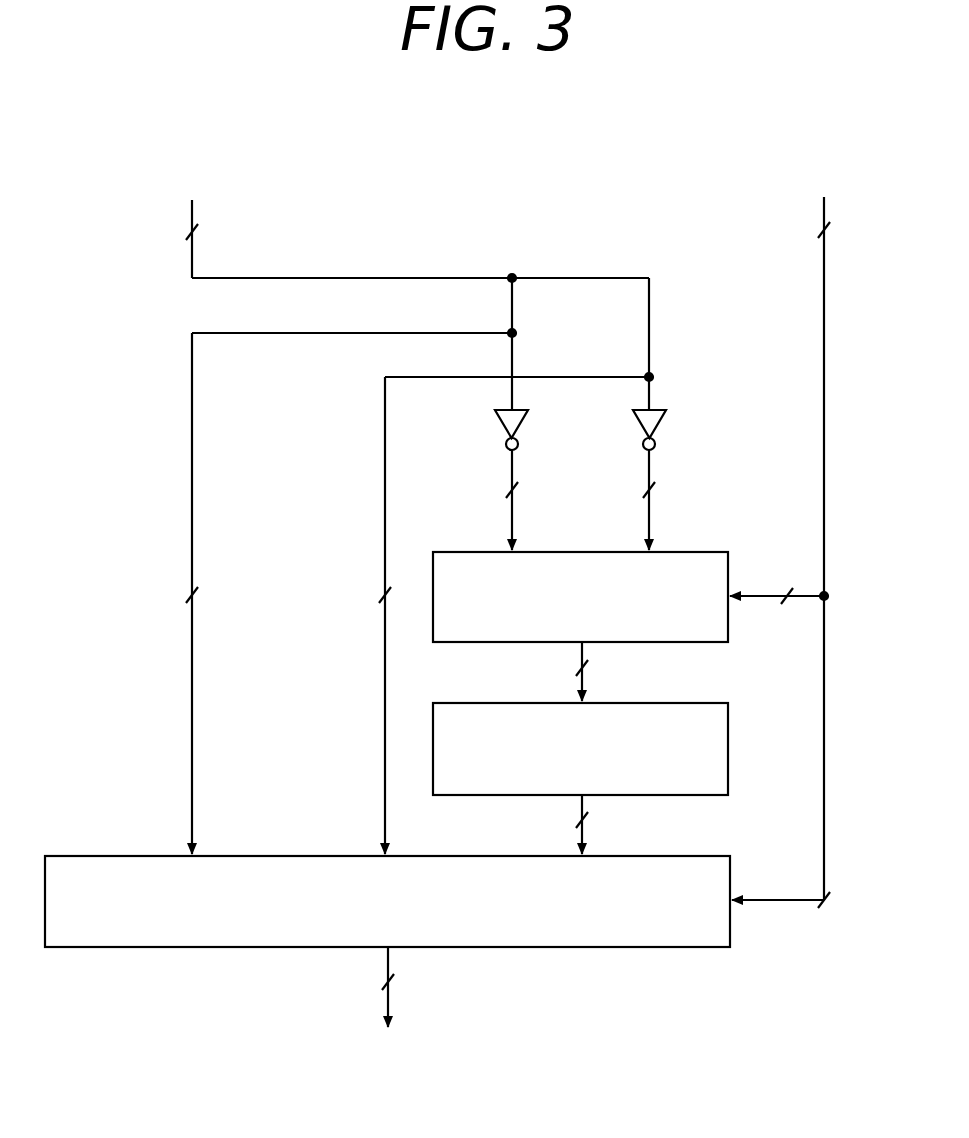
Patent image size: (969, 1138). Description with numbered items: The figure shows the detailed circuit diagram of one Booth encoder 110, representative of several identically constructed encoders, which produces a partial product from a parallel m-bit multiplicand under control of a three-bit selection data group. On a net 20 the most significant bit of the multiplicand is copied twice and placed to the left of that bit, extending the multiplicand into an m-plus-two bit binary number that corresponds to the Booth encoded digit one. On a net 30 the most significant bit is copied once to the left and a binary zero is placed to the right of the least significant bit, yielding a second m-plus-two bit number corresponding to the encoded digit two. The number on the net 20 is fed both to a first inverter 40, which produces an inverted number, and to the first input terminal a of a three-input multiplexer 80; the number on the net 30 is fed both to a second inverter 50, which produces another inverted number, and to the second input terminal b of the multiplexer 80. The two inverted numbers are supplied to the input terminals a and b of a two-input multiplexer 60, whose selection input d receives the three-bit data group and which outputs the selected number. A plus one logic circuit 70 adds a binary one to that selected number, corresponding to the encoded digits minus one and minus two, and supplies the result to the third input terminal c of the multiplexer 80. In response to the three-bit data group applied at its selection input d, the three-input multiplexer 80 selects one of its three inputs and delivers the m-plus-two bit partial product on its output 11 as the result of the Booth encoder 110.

The Booth encoder 110 is at (551, 169).
The net 20 is at (512, 318).
The net 30 is at (649, 318).
The first inverter 40 is at (527, 424).
The second inverter 50 is at (665, 424).
The two-input multiplexer 60 is at (728, 572).
The plus "1" logic circuit 70 is at (728, 738).
The three-input multiplexer 80 is at (730, 876).
The output bus width of TMP1 11 is at (411, 978).